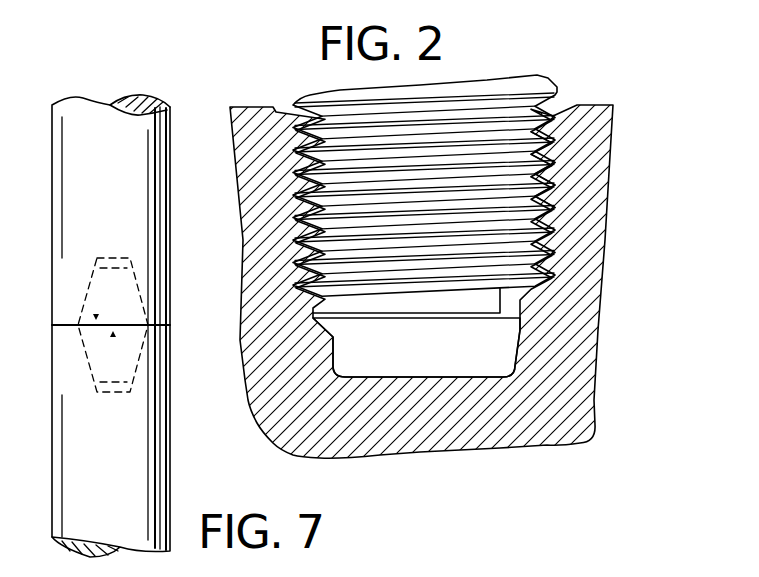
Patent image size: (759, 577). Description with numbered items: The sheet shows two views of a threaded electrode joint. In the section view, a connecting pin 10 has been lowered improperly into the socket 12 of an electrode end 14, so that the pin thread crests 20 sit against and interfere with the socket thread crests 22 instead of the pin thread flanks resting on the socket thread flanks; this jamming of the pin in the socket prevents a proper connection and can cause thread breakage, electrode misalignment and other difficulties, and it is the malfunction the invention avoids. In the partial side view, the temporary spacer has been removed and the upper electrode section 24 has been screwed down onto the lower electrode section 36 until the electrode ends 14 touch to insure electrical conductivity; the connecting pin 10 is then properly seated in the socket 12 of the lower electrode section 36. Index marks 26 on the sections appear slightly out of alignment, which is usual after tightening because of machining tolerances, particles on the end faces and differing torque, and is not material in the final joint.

In FIG. 2, the connecting pin 10 is at (540, 80).
In FIG. 7, the connecting pin 10 is at (100, 356).
In FIG. 2, the socket 12 is at (380, 347).
In FIG. 7, the socket 12 is at (112, 395).
In FIG. 2, the electrode end 14 is at (607, 132).
In FIG. 7, the electrode end 14 is at (172, 293).
In FIG. 2, the pin thread crests 20 is at (563, 162).
In FIG. 2, the socket thread crests 22 is at (556, 190).
In FIG. 7, the upper electrode section 24 is at (172, 152).
In FIG. 7, the parting line 26 is at (56, 318).
In FIG. 7, the lower electrode section 36 is at (172, 473).